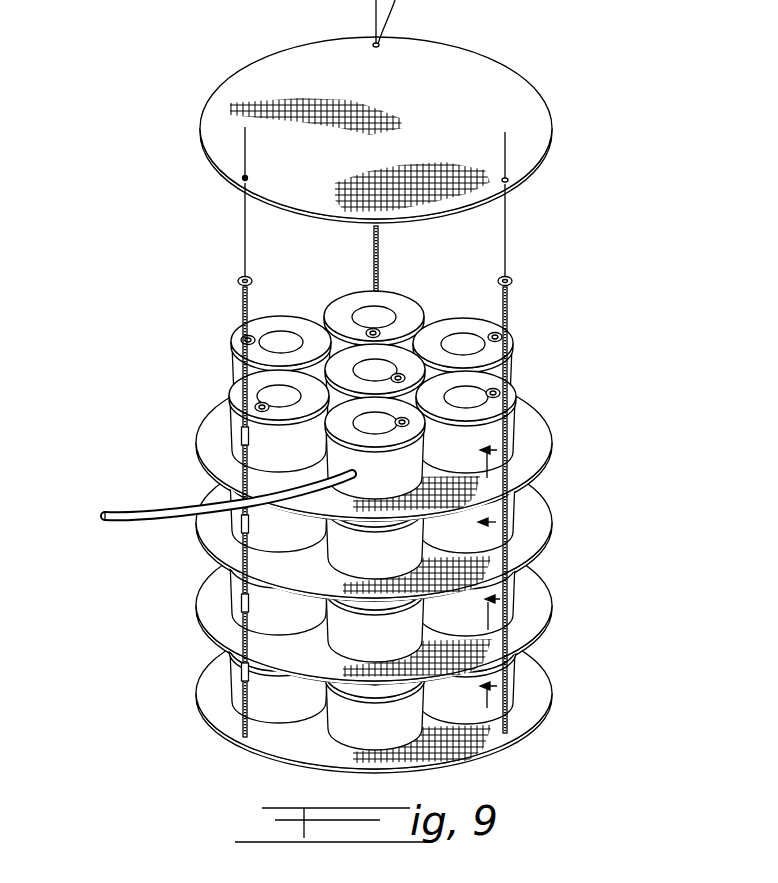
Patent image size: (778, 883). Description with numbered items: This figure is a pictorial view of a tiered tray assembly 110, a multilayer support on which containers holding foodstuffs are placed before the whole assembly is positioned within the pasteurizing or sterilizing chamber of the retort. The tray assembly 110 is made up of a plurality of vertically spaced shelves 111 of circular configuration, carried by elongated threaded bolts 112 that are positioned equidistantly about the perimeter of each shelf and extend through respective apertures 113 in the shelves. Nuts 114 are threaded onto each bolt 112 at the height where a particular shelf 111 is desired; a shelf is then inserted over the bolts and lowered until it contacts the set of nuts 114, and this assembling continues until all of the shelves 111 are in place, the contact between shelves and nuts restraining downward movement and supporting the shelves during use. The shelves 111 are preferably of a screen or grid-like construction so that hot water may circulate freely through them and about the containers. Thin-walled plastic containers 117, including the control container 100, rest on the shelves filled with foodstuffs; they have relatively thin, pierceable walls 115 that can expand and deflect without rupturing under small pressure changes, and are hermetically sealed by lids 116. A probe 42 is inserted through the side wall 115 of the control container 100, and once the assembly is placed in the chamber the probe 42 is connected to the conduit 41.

The conduit 41 is at (125, 524).
The probe 42 is at (537, 542).
The control container 100 is at (513, 496).
The tiered tray assembly 110 is at (345, 386).
The shelf 111 is at (220, 100).
The elongated threaded bolt 112 is at (379, 262).
The aperture 113 is at (245, 177).
The nut 114 is at (238, 281).
The wall 115 is at (240, 437).
The lid 116 is at (357, 303).
The container 117 is at (500, 452).